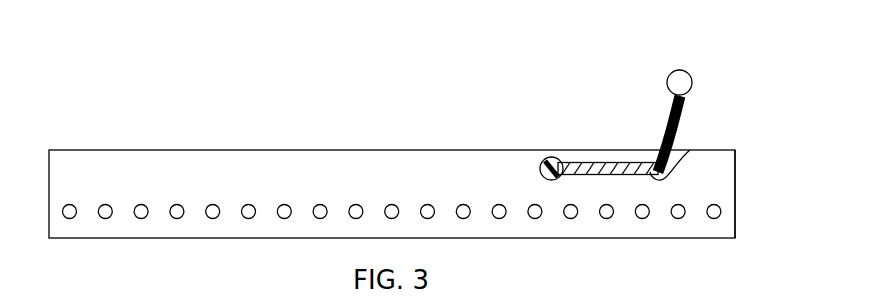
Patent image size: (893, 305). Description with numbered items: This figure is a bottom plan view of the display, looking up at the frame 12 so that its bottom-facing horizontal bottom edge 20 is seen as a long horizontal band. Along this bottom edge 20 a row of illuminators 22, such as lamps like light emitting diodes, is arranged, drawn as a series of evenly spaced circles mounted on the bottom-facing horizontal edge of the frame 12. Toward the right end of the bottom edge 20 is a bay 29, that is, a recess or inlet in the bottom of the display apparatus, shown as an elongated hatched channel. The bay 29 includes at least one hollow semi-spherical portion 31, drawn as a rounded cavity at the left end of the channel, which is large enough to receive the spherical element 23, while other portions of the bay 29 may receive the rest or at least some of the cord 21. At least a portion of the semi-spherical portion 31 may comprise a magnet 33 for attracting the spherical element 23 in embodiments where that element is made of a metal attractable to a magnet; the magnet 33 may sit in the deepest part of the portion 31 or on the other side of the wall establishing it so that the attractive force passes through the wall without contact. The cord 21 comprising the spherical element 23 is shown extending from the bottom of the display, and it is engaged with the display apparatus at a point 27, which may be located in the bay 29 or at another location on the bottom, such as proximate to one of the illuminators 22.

The frame 12 is at (745, 167).
The bottom edge 20 is at (725, 194).
The illuminators 22 is at (218, 205).
The bay 29 is at (604, 162).
The hollow semi-spherical portion 31 is at (556, 162).
The magnet 33 is at (549, 178).
The cord 21 is at (665, 118).
The spherical element 23 is at (692, 84).
The point 27 is at (690, 150).